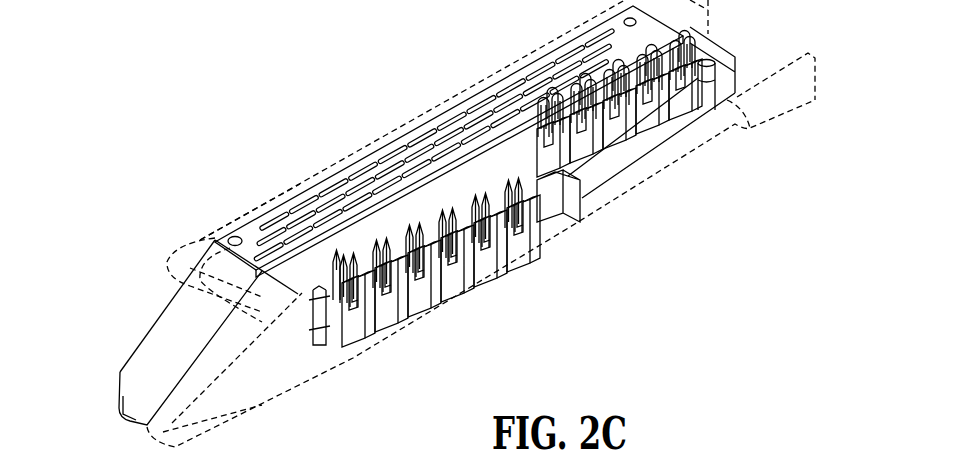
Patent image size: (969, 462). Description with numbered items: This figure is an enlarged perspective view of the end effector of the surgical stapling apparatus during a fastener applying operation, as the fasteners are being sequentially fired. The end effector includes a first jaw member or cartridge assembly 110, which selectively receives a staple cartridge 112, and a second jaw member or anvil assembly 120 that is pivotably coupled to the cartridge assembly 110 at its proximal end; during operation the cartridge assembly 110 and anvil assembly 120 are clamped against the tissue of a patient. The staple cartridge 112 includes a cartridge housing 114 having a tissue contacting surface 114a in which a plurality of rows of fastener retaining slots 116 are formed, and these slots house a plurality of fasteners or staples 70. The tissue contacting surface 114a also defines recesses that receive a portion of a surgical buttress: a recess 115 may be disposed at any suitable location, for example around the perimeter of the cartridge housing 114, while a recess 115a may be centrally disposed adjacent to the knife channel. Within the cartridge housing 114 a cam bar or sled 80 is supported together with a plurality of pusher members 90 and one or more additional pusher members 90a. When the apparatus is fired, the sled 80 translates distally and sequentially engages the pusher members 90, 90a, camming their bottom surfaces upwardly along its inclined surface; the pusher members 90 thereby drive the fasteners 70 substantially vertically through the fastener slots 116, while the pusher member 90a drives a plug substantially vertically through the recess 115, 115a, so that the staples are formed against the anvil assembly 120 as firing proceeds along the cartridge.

The fasteners or staples 70 is at (440, 288).
The sled 80 is at (562, 218).
The pusher members 90 is at (490, 265).
The pusher member 90a is at (727, 100).
The cartridge assembly 110 is at (130, 355).
The staple cartridge 112 is at (530, 75).
The cartridge housing 114 is at (410, 138).
The tissue contacting surface 114a is at (512, 121).
The recess 115 is at (233, 236).
The recess 115a is at (463, 133).
The fastener retaining slots 116 is at (365, 163).
The anvil assembly 120 is at (283, 191).